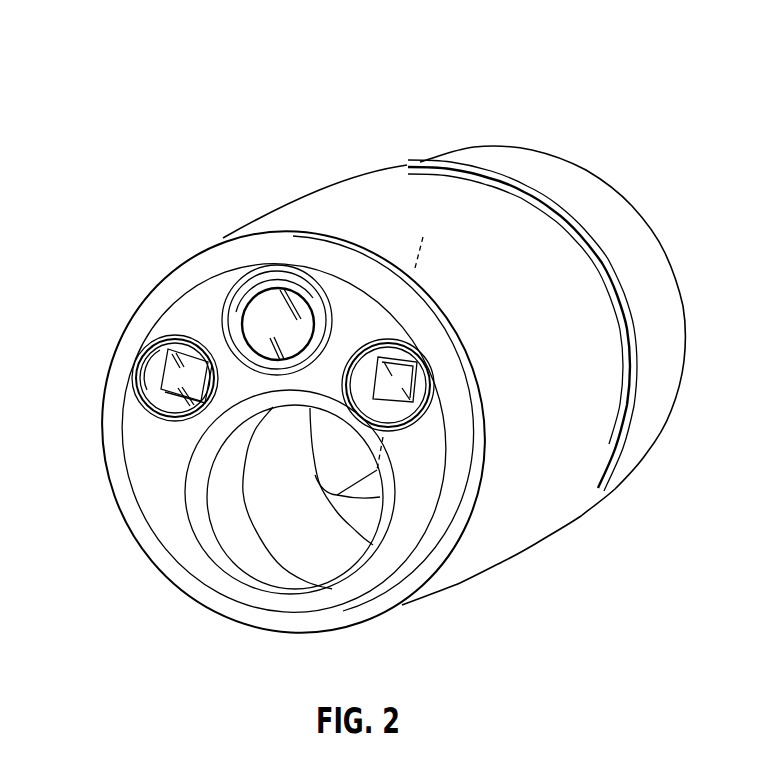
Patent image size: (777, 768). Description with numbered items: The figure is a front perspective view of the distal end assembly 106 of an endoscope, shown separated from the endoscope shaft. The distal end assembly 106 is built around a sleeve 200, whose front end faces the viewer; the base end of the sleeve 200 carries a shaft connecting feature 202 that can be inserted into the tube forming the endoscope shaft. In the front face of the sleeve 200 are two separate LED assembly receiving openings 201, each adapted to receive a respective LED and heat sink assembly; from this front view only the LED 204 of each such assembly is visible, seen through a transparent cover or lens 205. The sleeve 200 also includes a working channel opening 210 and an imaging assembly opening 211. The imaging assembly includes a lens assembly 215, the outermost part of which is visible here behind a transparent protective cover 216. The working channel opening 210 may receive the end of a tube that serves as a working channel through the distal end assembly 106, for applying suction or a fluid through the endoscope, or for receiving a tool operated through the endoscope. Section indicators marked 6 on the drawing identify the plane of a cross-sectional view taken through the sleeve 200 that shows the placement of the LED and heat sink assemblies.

The distal end assembly 106 is at (225, 166).
The sleeve 200 is at (340, 205).
The shaft connecting feature 202 is at (482, 153).
The working channel opening 210 is at (257, 563).
The imaging assembly opening 211 is at (220, 327).
The lens assembly 215 is at (263, 283).
The transparent protective cover 216 is at (253, 312).
The LED assembly receiving openings 201 is at (167, 400).
The LED 204 is at (180, 360).
The transparent cover or lens 205 is at (140, 407).
The section line 6 is at (423, 237).